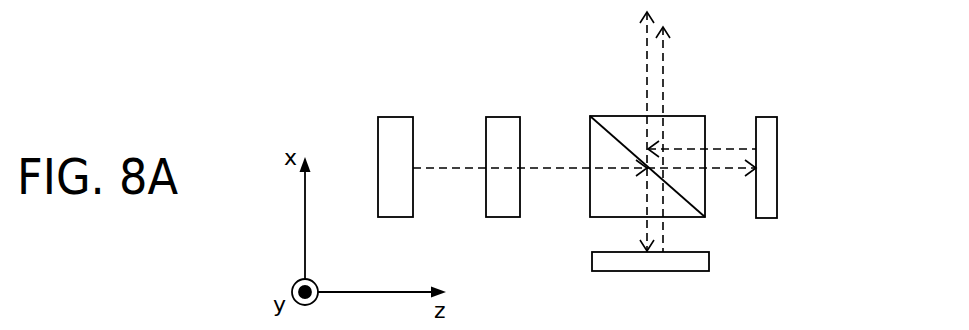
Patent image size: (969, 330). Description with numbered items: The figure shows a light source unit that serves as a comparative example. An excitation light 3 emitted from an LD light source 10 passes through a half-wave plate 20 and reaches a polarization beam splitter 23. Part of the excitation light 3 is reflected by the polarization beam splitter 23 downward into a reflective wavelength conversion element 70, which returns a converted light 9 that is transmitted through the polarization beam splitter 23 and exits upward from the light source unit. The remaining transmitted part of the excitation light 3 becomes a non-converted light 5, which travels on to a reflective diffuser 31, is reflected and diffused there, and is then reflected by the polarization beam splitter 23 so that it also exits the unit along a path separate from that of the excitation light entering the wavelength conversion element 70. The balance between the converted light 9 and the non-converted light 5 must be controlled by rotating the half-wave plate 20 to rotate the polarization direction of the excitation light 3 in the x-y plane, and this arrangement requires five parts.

The LD light source 10 is at (398, 121).
The half-wave plate 20 is at (503, 118).
The excitation light 3 is at (447, 167).
The polarization beam splitter 23 is at (705, 122).
The non-converted light 5 is at (645, 93).
The converted light 9 is at (665, 95).
The reflective diffuser 31 is at (776, 202).
The reflective wavelength conversion element 70 is at (709, 255).